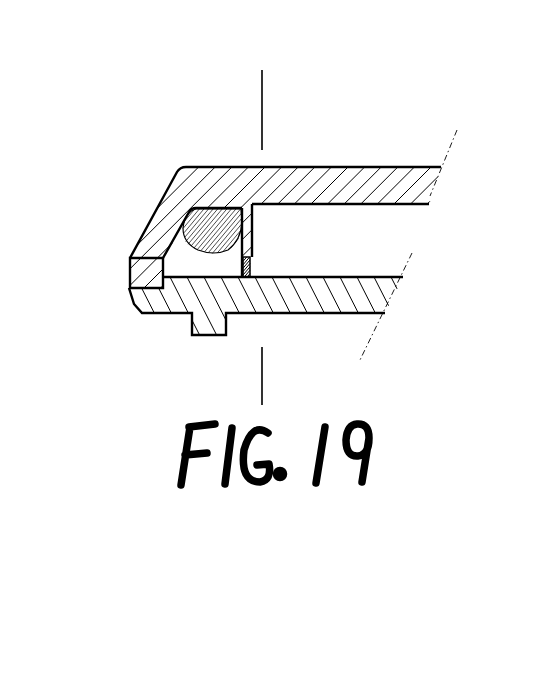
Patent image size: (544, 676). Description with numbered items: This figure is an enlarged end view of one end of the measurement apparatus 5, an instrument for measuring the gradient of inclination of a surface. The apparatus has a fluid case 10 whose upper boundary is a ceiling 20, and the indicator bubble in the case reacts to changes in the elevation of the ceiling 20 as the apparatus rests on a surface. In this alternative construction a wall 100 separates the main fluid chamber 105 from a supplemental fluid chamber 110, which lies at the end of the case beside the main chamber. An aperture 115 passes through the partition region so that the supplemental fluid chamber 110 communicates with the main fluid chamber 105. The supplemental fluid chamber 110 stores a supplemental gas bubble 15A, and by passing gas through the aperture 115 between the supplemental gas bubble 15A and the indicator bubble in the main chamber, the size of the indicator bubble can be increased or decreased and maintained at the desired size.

The measurement apparatus 5 is at (160, 107).
The fluid case 10 is at (354, 167).
The supplemental gas bubble 15A is at (192, 221).
The ceiling 20 is at (207, 107).
The wall 100 is at (252, 232).
The main fluid chamber 105 is at (363, 243).
The supplemental fluid chamber 110 is at (185, 258).
The aperture 115 is at (241, 265).